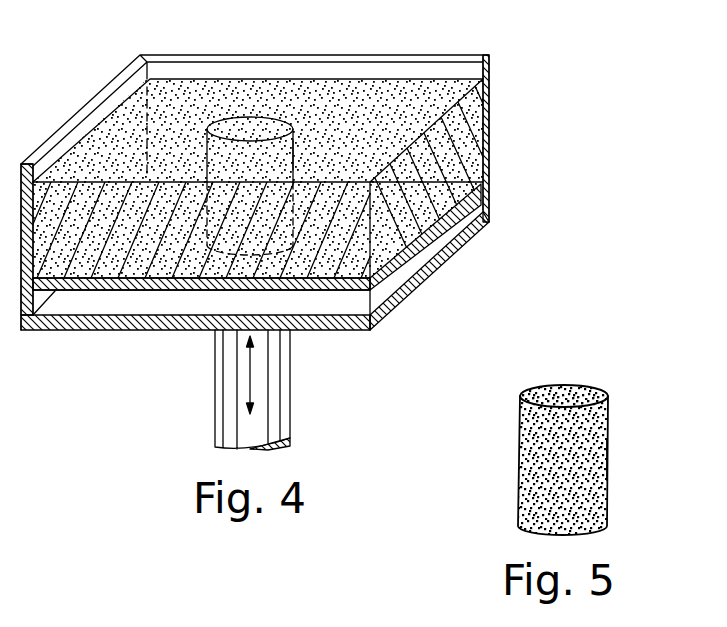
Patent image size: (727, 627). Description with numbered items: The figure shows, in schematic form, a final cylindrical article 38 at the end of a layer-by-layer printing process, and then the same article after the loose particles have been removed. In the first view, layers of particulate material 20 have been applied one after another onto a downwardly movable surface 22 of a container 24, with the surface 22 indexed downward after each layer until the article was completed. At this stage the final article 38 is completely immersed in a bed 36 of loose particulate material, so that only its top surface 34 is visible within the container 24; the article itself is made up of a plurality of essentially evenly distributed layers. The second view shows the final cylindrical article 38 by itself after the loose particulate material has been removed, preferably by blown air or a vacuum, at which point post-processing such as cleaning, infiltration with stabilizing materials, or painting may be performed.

In FIG. 4, the particulate material 20 is at (347, 90).
In FIG. 4, the downwardly movable surface 22 is at (437, 228).
In FIG. 4, the container 24 is at (490, 170).
In FIG. 4, the top surface 34 is at (246, 116).
In FIG. 5, the top surface 34 is at (568, 391).
In FIG. 4, the bed of loose particulate material 36 is at (487, 125).
In FIG. 4, the final article 38 is at (303, 152).
In FIG. 5, the final article 38 is at (612, 460).